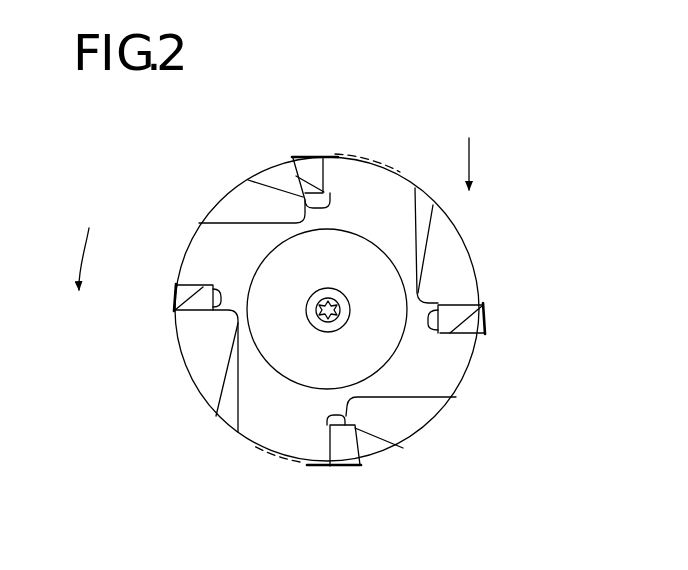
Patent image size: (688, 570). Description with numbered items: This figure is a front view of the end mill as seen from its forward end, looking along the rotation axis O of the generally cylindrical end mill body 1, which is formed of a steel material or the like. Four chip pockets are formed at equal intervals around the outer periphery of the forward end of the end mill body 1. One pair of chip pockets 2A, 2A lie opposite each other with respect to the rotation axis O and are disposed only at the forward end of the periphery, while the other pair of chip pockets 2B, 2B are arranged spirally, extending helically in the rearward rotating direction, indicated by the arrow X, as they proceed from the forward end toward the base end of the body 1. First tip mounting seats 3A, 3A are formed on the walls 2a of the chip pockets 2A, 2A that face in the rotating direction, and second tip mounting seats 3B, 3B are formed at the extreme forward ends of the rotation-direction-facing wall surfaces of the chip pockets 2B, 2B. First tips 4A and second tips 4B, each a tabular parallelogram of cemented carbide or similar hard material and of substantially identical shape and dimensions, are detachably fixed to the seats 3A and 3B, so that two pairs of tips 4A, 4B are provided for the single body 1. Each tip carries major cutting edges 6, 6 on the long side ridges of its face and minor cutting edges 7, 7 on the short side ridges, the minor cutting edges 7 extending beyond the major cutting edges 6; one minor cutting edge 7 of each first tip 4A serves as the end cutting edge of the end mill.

The end mill body 1 is at (510, 165).
The chip pocket 2A is at (506, 227).
The wall 2a is at (428, 292).
The chip pocket 2B is at (234, 206).
The first tip mounting seat 3A is at (460, 337).
The second tip mounting seat 3B is at (338, 182).
The first tip 4A is at (484, 333).
The second tip 4B is at (305, 158).
The major cutting edge 6 is at (303, 160).
The minor cutting edge 7 is at (478, 303).
The rotation axis O is at (325, 300).
The direction of rotation X is at (481, 164).